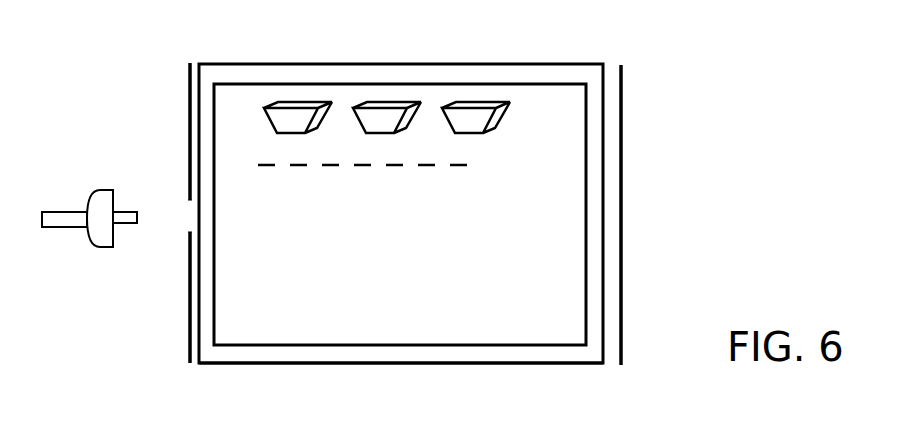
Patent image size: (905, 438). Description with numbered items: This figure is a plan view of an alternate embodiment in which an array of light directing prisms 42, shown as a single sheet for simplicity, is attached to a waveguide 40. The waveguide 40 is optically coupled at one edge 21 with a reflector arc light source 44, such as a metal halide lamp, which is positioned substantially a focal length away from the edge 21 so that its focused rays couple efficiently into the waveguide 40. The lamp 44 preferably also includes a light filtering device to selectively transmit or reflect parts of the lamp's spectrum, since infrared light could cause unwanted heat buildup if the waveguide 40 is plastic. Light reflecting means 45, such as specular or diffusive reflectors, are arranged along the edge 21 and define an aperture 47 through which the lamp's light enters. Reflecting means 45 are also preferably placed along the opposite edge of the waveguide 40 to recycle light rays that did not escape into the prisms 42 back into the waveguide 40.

The waveguide 40 is at (457, 64).
The light directing prisms 42 is at (588, 115).
The light reflecting means 45 is at (188, 135).
The aperture 47 is at (187, 210).
The reflector arc light source 44 is at (102, 245).
The edge 21 is at (199, 352).